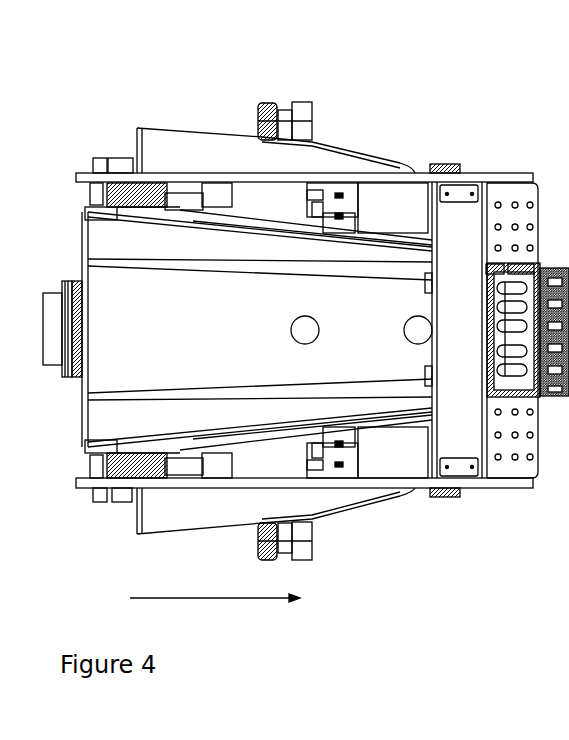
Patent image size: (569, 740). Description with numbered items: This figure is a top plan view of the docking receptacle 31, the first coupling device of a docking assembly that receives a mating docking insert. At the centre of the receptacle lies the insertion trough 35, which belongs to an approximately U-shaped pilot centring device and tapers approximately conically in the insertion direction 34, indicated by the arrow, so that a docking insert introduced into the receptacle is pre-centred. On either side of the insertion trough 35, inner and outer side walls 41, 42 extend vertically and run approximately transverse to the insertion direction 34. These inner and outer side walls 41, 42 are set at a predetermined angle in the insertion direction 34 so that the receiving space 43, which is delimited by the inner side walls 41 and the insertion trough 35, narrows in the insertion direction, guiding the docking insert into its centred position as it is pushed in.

The docking receptacle 31 is at (517, 128).
The insertion direction 34 is at (215, 587).
The insertion trough 35 is at (193, 353).
The inner side walls 41 is at (283, 225).
The outer side walls 42 is at (235, 172).
The receiving space 43 is at (148, 292).